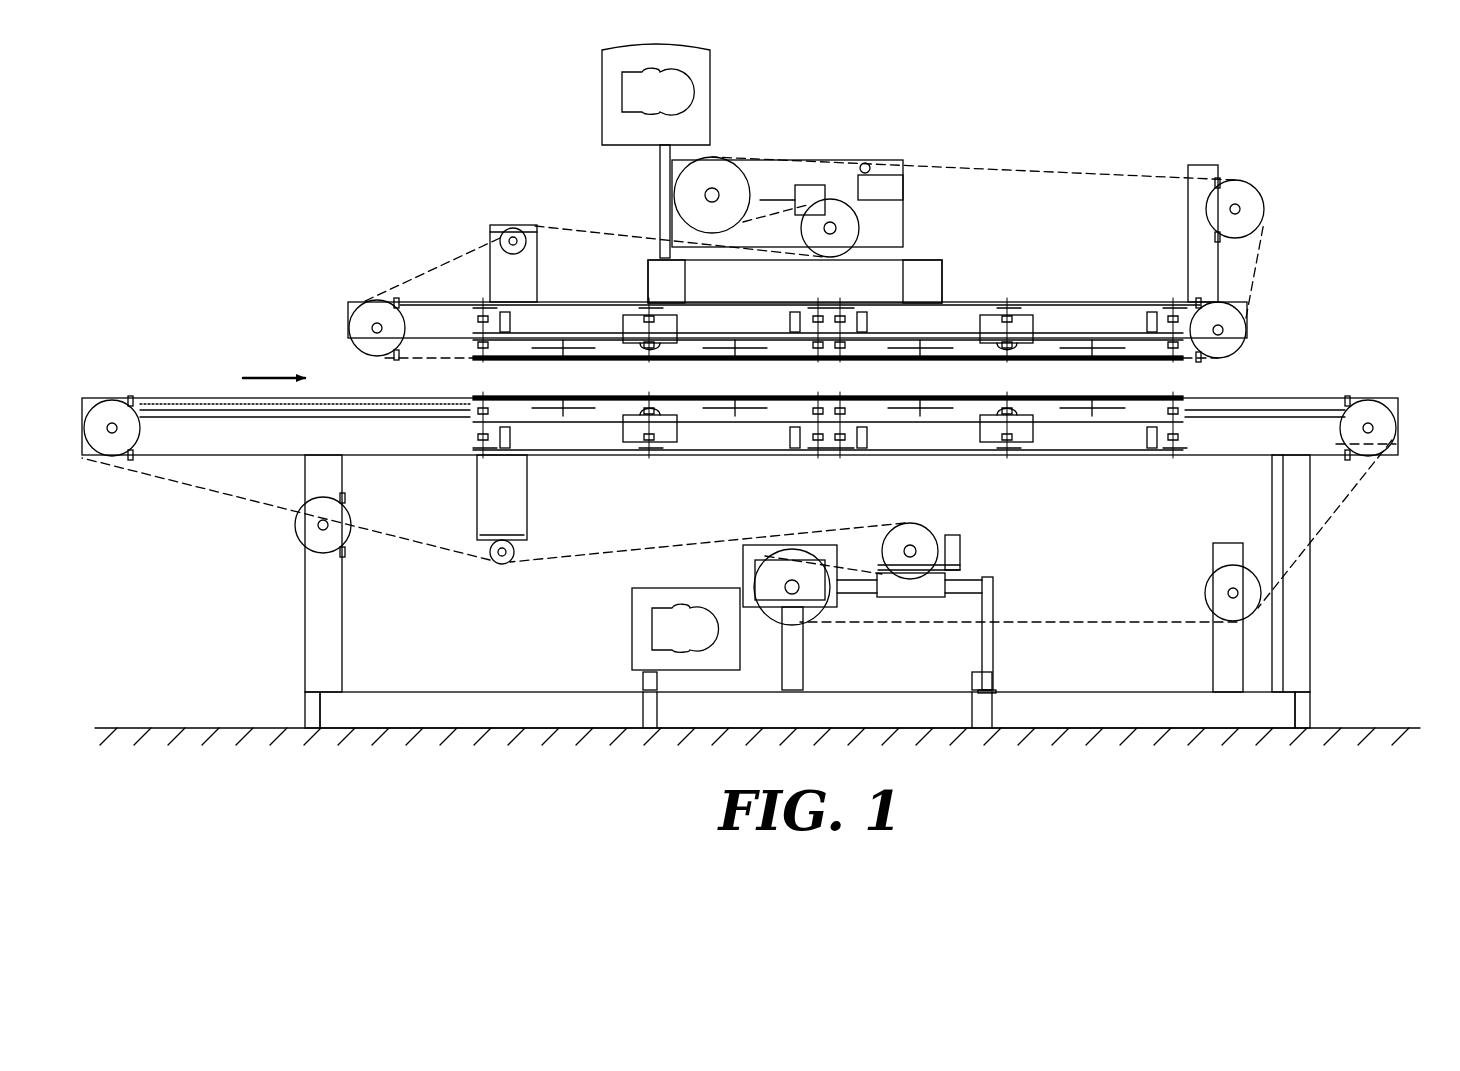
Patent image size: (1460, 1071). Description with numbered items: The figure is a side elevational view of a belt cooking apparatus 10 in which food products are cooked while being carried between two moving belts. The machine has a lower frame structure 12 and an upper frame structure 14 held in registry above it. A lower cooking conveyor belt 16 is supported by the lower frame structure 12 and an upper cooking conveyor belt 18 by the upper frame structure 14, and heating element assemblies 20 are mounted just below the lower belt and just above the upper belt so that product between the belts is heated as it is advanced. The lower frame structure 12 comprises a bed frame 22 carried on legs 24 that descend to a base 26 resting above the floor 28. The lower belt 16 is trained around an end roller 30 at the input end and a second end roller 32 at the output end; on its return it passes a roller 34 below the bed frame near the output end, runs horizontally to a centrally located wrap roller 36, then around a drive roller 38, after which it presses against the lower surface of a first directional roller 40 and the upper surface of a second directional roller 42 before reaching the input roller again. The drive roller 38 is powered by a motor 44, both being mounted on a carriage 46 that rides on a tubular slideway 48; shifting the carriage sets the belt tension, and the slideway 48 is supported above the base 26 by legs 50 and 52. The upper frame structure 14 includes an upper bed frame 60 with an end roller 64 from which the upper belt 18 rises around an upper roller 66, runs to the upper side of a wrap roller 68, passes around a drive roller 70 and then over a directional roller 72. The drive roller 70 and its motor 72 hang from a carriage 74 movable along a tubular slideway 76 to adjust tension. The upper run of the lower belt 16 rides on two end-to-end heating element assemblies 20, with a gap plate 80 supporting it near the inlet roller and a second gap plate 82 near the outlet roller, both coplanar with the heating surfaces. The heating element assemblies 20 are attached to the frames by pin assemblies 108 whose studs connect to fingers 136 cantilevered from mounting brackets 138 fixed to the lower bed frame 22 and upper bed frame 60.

The belt cooking apparatus 10 is at (270, 153).
The lower frame structure 12 is at (1378, 523).
The upper frame structure 14 is at (1290, 210).
The lower cooking conveyor belt 16 is at (1330, 522).
The upper cooking conveyor belt 18 is at (1255, 265).
The heating element assemblies 20 is at (600, 360).
The bed frame 22 is at (197, 460).
The legs 24 is at (305, 606).
The base 26 is at (485, 705).
The floor 28 is at (200, 728).
The end roller 30 is at (110, 415).
The second end roller 32 is at (1375, 415).
The roller 34 is at (1210, 595).
The wrap roller 36 is at (788, 560).
The drive roller 38 is at (913, 528).
The first directional roller 40 is at (510, 560).
The second directional roller 42 is at (300, 525).
The motor 44 is at (970, 545).
The carriage 46 is at (935, 592).
The tubular slideway 48 is at (1003, 585).
The leg 50 is at (800, 650).
The leg 52 is at (990, 650).
The upper bed frame 60 is at (398, 265).
The end roller 64 is at (1240, 325).
The upper roller 66 is at (1245, 190).
The wrap roller 68 is at (727, 180).
The drive roller 70 is at (845, 215).
The directional roller 72 is at (513, 241).
The carriage 74 is at (812, 190).
The tubular slideway 76 is at (885, 185).
The gap plate 80 is at (210, 410).
The second gap plate 82 is at (1222, 410).
The pin assemblies 108 is at (475, 320).
The fingers 136 is at (1160, 310).
The mounting brackets 138 is at (570, 320).